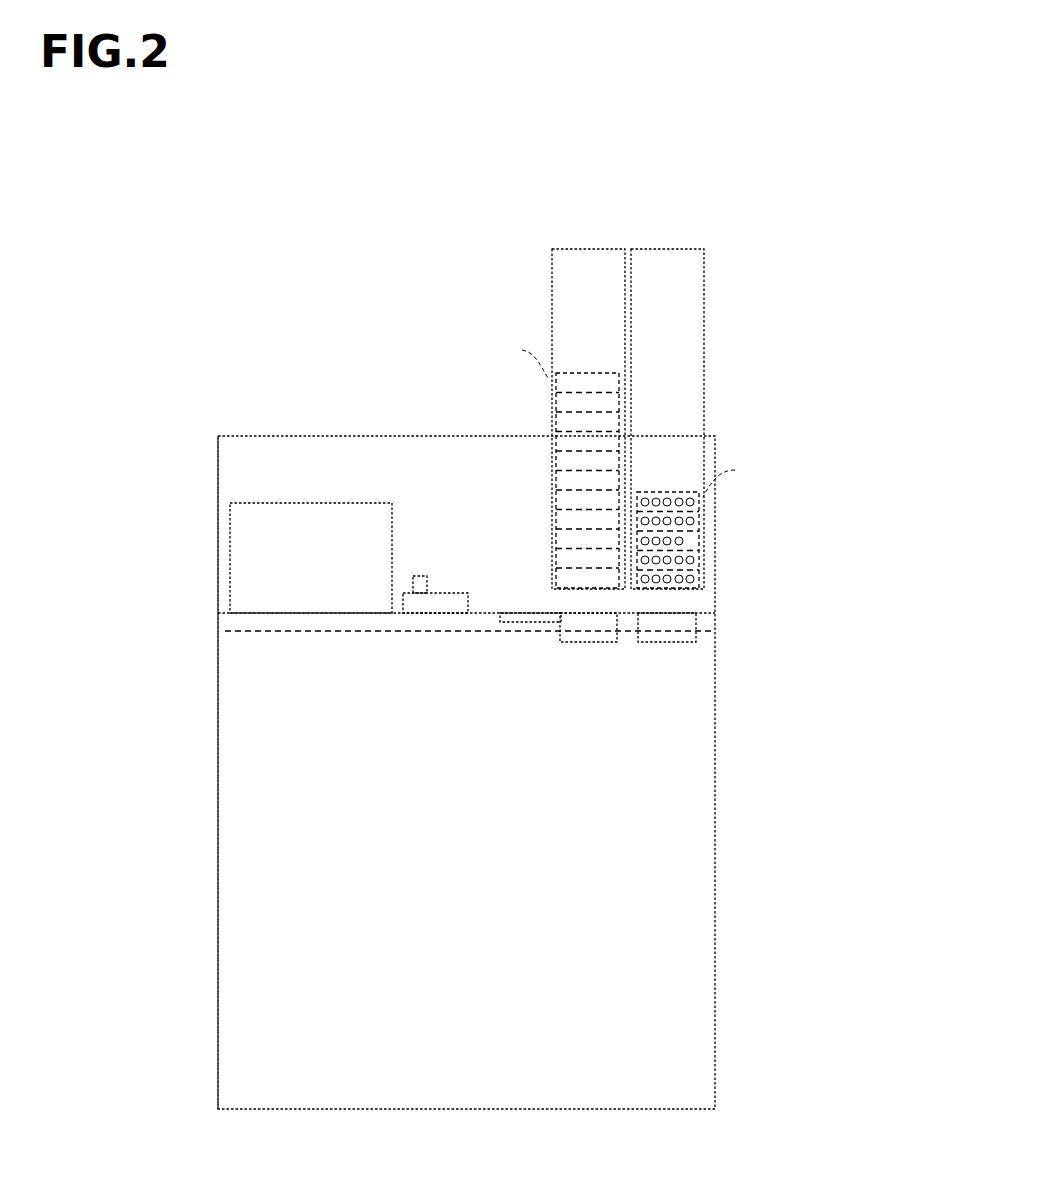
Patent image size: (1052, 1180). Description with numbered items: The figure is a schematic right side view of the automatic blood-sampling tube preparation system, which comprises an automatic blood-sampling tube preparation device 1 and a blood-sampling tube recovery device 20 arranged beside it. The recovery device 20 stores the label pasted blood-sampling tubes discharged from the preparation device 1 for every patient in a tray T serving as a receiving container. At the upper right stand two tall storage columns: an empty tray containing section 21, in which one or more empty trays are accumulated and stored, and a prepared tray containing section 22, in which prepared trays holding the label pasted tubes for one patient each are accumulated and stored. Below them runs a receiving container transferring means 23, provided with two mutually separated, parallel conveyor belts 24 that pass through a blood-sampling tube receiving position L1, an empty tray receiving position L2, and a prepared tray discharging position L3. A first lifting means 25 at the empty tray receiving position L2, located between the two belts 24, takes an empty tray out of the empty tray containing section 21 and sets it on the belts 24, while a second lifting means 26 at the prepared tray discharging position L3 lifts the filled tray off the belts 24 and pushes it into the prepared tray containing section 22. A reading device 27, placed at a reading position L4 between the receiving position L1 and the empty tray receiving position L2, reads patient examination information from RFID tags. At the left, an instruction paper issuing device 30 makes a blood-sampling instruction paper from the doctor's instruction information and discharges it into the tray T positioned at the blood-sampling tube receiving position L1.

The automatic blood-sampling tube preparation device 1 is at (332, 433).
The blood-sampling tube recovery device 20 is at (217, 860).
The empty tray containing section 21 is at (587, 252).
The prepared tray containing section 22 is at (665, 252).
The receiving container transferring means 23 is at (388, 672).
The conveyor belts 24 is at (335, 640).
The first lifting means 25 is at (590, 645).
The second lifting means 26 is at (668, 645).
The reading device 27 is at (535, 630).
The instruction paper issuing device 30 is at (242, 535).
The tray T is at (443, 600).
The blood-sampling tube receiving position L1 is at (438, 614).
The empty tray receiving position L2 is at (583, 612).
The prepared tray discharging position L3 is at (668, 611).
The reading position L4 is at (527, 612).